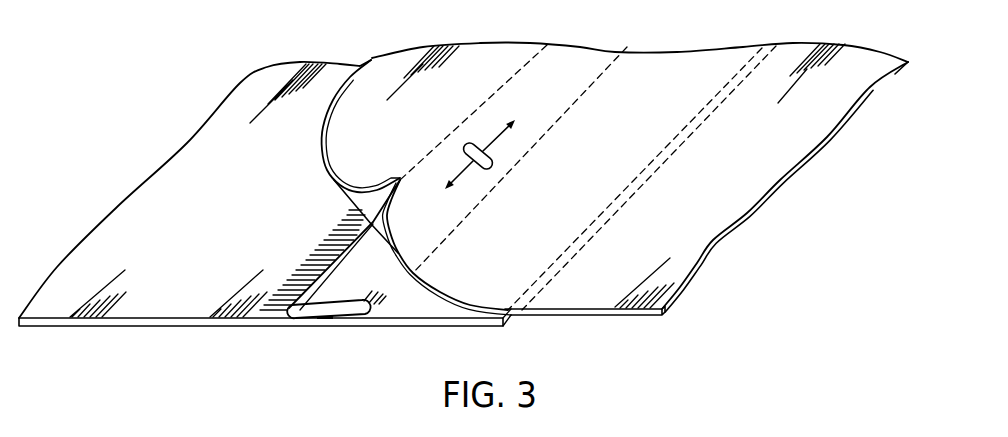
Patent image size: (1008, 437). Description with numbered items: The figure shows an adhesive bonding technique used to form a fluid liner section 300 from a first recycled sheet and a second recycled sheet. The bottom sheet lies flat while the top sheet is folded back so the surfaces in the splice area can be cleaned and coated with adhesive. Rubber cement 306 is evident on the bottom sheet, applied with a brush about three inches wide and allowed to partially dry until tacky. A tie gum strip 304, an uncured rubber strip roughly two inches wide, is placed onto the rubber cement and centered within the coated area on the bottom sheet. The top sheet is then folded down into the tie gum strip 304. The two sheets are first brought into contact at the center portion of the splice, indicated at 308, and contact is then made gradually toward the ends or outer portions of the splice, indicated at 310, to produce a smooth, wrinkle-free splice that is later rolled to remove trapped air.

The fluid liner section 300 is at (204, 27).
The tie gum strip 304 is at (375, 283).
The rubber cement 306 is at (333, 229).
The center portion of the splice 308 is at (493, 148).
The outer portions of the splice 310 is at (462, 176).